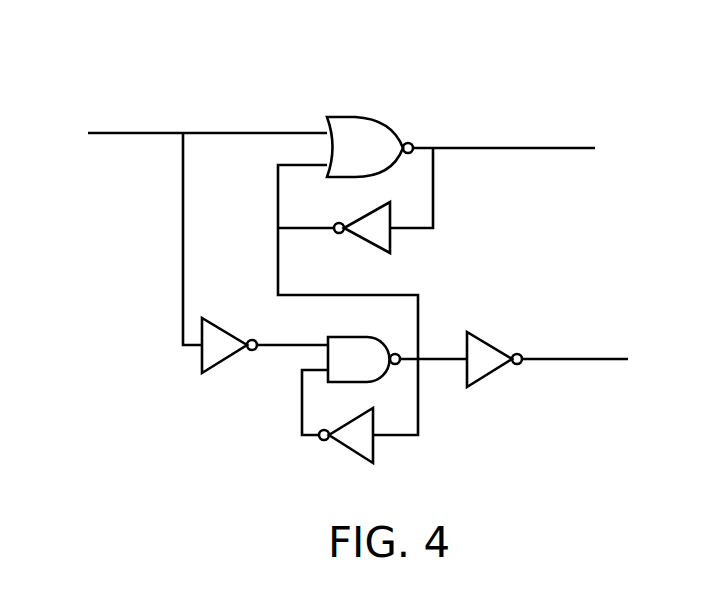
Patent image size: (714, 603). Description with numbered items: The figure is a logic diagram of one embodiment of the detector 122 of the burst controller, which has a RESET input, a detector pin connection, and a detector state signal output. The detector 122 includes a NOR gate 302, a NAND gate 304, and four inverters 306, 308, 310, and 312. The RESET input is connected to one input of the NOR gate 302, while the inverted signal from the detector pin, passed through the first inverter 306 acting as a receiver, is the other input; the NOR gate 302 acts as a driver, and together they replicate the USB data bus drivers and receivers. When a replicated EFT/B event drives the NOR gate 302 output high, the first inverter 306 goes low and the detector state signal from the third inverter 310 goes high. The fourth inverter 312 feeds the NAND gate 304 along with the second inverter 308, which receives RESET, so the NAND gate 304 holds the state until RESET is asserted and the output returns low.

The detector 122 is at (117, 48).
The NOR gate 302 is at (391, 127).
The NAND gate 304 is at (326, 341).
The inverter INV1 306 is at (388, 240).
The inverter INV2 308 is at (202, 358).
The inverter INV3 310 is at (484, 370).
The inverter INV4 312 is at (375, 452).